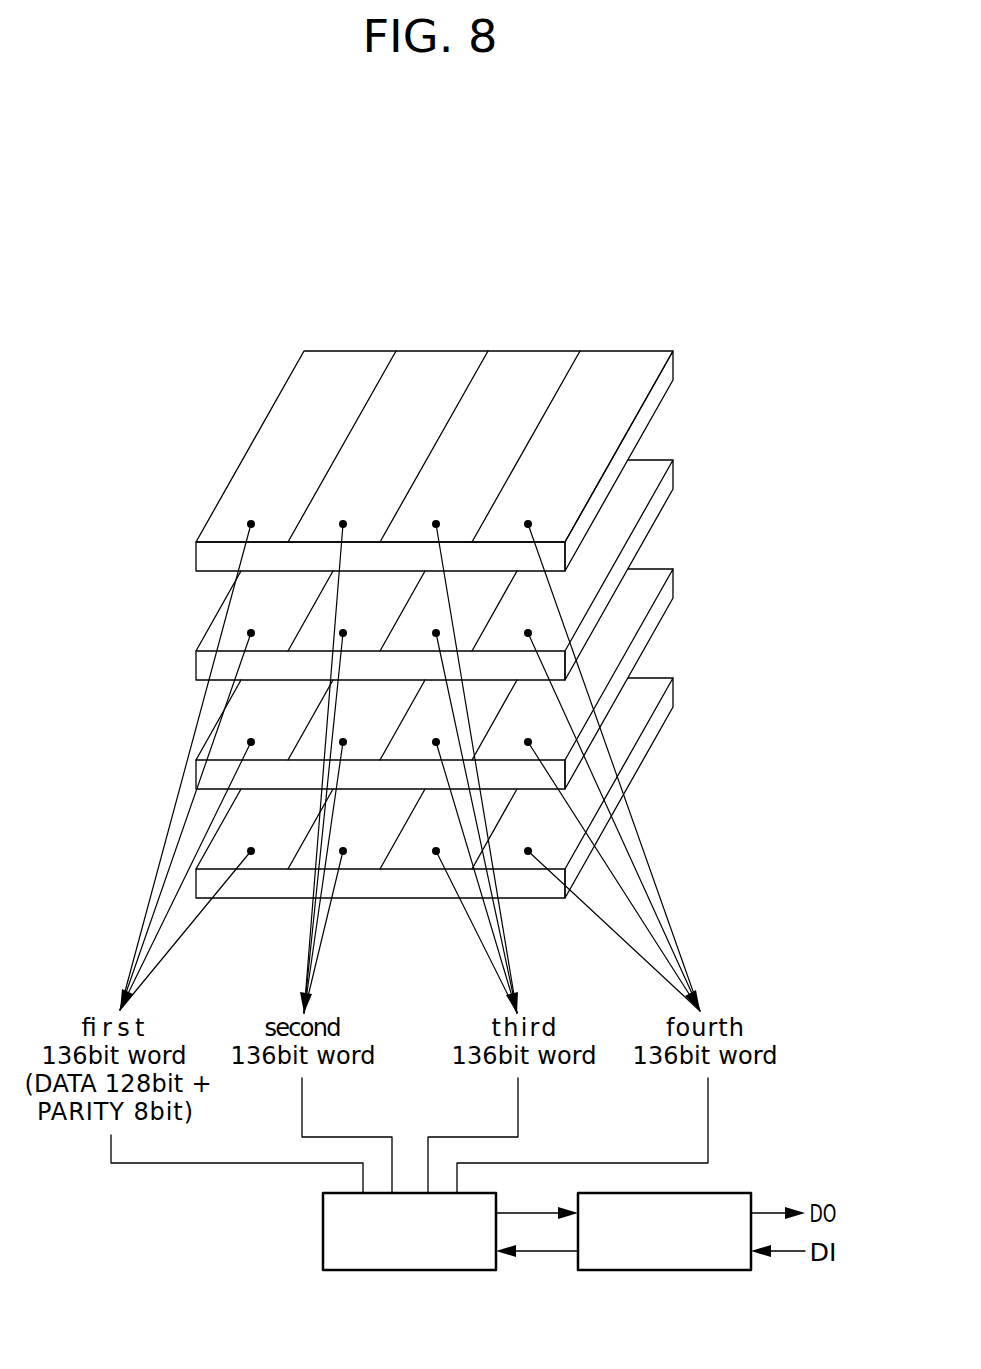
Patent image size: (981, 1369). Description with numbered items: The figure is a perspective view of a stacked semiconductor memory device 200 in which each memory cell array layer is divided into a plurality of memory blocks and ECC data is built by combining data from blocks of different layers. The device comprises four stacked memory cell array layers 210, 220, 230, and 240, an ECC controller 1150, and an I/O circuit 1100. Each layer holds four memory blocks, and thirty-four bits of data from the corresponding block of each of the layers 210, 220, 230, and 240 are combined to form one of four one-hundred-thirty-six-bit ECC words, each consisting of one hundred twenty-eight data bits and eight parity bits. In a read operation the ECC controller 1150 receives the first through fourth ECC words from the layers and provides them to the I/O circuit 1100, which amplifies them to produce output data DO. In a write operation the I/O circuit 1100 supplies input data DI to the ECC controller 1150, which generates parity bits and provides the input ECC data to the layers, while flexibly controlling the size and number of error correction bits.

The stacked semiconductor memory device 200 is at (530, 295).
The memory cell array layer 210 is at (667, 699).
The memory cell array layer 220 is at (667, 590).
The memory cell array layer 230 is at (667, 481).
The memory cell array layer 240 is at (667, 372).
The I/O circuit 1100 is at (717, 1193).
The ECC controller 1150 is at (323, 1233).